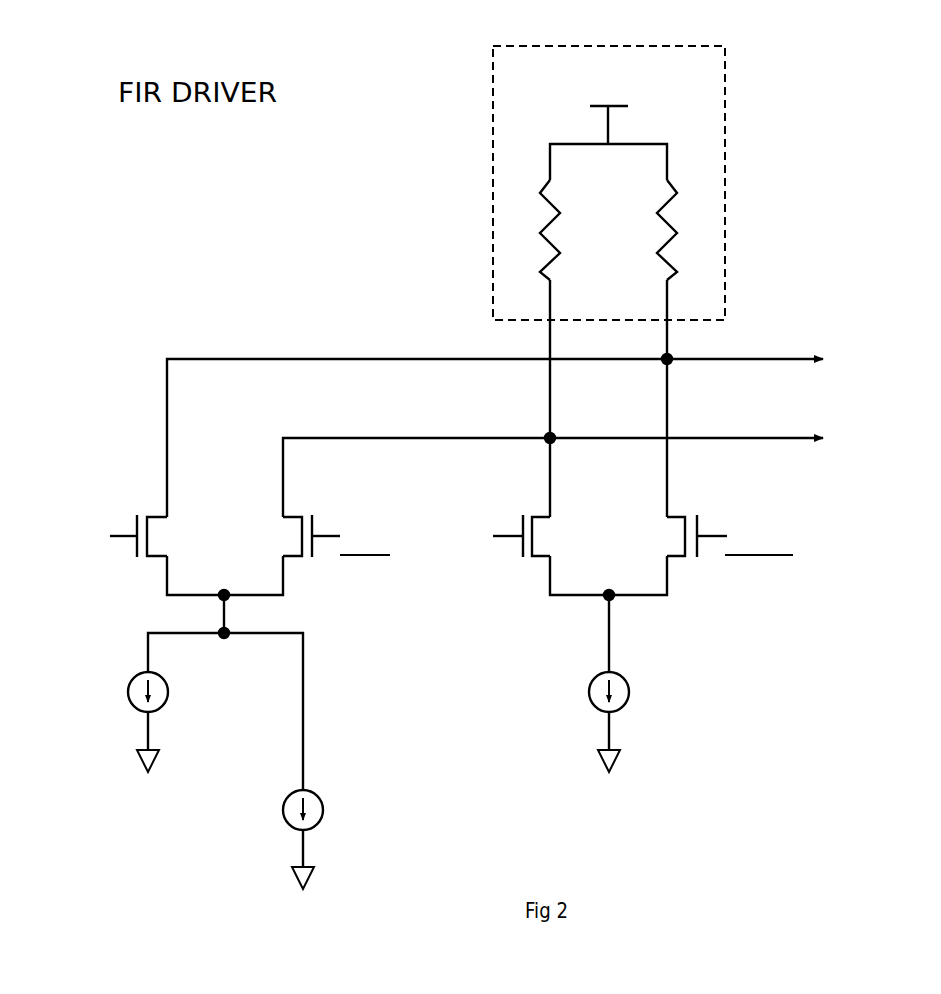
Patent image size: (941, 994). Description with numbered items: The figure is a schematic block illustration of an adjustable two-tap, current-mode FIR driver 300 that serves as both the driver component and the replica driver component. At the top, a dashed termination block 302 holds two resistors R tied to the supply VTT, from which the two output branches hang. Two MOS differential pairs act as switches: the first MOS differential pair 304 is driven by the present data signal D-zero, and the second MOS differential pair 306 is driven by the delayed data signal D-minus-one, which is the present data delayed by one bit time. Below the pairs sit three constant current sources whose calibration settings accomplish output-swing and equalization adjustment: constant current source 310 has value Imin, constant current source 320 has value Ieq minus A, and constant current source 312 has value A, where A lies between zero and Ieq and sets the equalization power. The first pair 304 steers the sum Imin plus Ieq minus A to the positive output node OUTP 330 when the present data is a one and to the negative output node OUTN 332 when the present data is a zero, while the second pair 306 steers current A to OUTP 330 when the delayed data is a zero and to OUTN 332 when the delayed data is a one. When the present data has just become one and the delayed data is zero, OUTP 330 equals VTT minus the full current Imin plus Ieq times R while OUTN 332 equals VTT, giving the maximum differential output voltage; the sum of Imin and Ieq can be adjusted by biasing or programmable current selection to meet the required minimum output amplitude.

The adjustable 2-tap FIR driver 300 is at (270, 236).
The termination resistor block 302 is at (738, 111).
The MOS differential pair 304 is at (147, 507).
The MOS differential pair 306 is at (527, 565).
The constant current source 310 is at (172, 662).
The constant current source 312 is at (633, 666).
The constant current source 320 is at (328, 778).
The positive output node OUTP 330 is at (824, 341).
The negative output node OUTN 332 is at (842, 462).